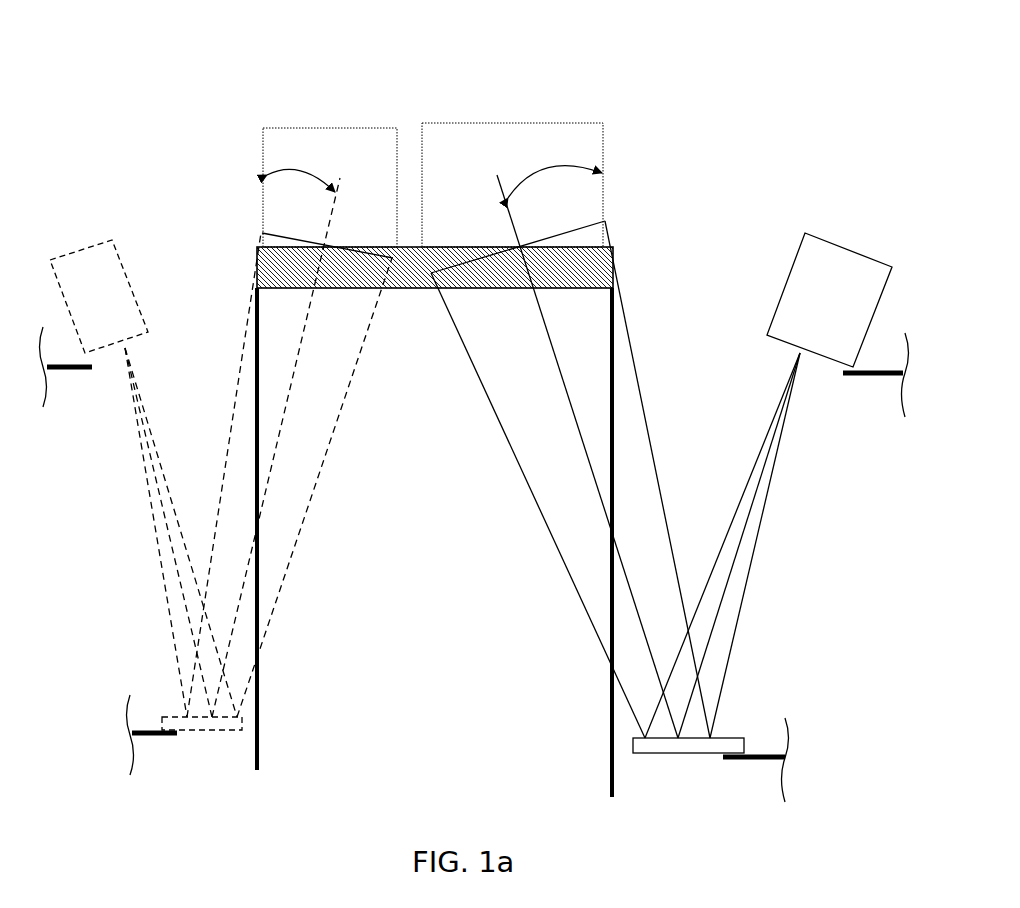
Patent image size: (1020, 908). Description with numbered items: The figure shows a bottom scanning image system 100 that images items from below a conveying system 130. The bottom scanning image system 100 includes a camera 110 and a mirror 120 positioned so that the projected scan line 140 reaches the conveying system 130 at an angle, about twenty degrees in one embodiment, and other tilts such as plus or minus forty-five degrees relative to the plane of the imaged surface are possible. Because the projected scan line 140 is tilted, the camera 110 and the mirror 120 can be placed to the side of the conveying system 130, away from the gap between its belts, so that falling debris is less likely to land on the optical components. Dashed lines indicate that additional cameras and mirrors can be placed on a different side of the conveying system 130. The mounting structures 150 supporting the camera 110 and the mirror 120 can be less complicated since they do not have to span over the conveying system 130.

The bottom scanning image system 100 is at (245, 127).
The camera 110 is at (193, 312).
The mirror 120 is at (237, 725).
The conveying system 130 is at (300, 290).
The projected scan line 140 is at (152, 509).
The mounting structures 150 is at (57, 371).